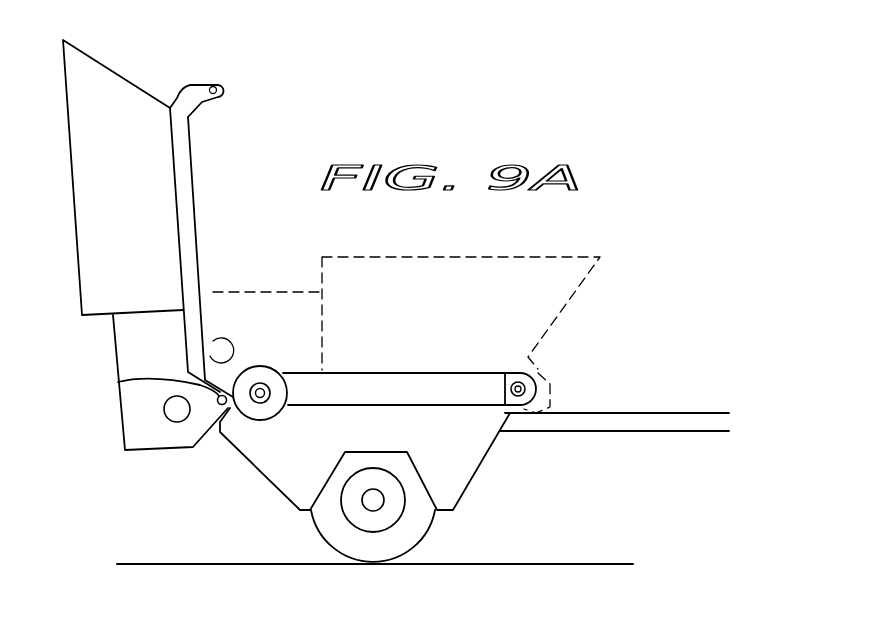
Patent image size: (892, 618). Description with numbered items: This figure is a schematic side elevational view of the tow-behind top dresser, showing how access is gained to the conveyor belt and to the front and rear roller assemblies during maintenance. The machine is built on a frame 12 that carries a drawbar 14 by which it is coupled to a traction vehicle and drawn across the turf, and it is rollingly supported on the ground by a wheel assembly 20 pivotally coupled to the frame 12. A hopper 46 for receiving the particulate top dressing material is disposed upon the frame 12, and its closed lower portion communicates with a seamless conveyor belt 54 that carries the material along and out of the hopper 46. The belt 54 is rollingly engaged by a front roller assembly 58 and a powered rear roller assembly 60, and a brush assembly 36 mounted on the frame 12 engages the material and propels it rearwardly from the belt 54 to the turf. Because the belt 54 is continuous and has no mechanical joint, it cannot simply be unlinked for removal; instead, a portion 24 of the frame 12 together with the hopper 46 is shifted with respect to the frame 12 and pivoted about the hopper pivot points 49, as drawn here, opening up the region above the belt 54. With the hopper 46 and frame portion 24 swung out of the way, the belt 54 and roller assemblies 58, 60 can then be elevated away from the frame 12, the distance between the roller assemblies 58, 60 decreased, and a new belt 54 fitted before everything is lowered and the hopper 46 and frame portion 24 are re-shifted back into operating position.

The frame 12 is at (463, 465).
The drawbar 14 is at (648, 413).
The wheel assembly 20 is at (324, 540).
The frame portion 24 is at (203, 157).
The brush assembly 36 is at (422, 373).
The hopper 46 is at (113, 75).
The hopper pivot points 49 is at (118, 383).
The conveyor belt 54 is at (472, 373).
The front roller assembly 58 is at (537, 377).
The rear roller assembly 60 is at (260, 421).